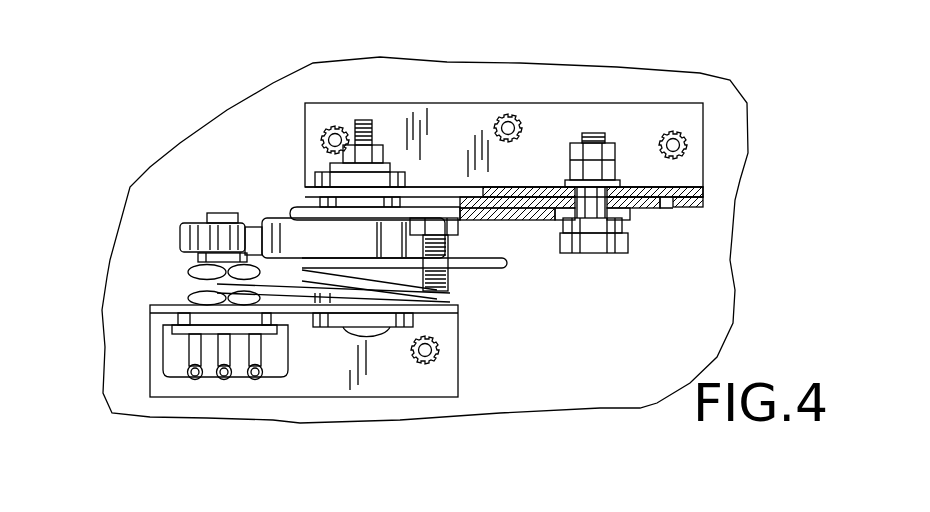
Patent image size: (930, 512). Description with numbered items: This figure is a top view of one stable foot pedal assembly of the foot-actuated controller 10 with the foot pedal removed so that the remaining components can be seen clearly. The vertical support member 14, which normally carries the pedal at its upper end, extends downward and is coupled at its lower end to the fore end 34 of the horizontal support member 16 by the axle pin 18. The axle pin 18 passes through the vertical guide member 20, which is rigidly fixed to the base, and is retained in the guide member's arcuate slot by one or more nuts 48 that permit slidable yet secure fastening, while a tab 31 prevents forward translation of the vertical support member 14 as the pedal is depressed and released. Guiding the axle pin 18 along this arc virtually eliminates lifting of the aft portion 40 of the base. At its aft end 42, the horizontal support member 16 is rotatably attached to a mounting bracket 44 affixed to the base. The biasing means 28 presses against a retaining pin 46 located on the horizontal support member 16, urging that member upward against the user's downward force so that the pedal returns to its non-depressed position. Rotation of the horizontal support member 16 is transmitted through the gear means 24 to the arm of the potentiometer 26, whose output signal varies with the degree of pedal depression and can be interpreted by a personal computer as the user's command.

The foot-actuated controller 10 is at (136, 140).
The vertical support member 14 is at (657, 207).
The horizontal support member 16 is at (538, 222).
The axle pin 18 is at (613, 253).
The vertical guide member 20 is at (688, 115).
The gear means 24 is at (284, 210).
The potentiometer 26 is at (270, 362).
The biasing means 28 is at (488, 272).
The tab 31 is at (700, 192).
The fore end 34 is at (630, 212).
The aft portion 40 is at (103, 290).
The aft end 42 is at (298, 212).
The mounting bracket 44 is at (443, 380).
The retaining pin 46 is at (437, 293).
The nuts 48 is at (615, 170).